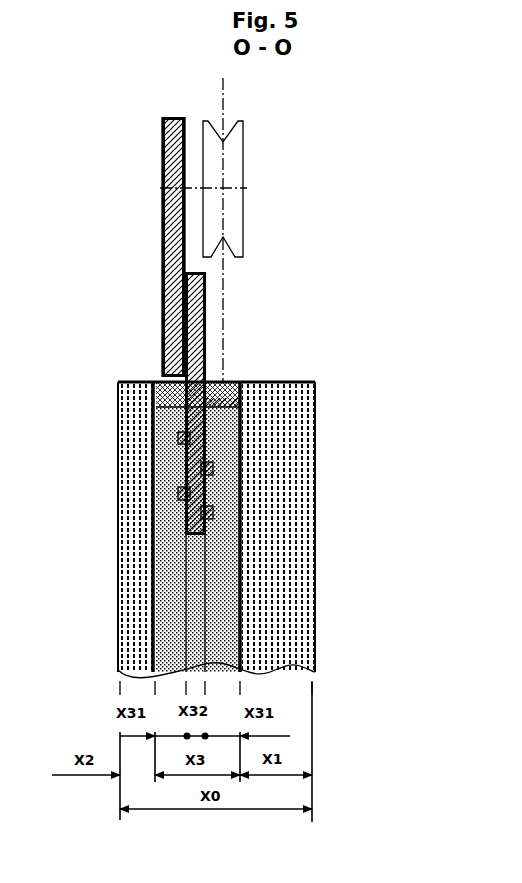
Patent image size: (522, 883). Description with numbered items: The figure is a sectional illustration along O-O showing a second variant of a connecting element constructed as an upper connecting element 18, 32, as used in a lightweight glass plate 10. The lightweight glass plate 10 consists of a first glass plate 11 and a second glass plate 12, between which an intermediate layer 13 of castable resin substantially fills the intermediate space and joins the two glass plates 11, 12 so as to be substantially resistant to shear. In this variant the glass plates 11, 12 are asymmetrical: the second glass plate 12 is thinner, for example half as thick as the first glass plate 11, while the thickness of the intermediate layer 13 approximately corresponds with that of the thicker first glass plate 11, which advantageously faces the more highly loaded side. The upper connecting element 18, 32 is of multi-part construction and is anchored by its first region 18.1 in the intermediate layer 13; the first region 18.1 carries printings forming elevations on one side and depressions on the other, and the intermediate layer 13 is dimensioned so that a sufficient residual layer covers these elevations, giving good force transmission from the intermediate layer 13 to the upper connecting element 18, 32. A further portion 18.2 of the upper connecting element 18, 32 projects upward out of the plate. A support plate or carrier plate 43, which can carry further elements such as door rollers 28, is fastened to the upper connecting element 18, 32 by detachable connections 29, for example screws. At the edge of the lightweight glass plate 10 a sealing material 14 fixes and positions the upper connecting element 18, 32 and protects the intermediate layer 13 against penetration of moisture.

The lightweight glass plate 10 is at (130, 130).
The first glass plate 11 is at (216, 530).
The second glass plate 12 is at (130, 428).
The intermediate layer 13 is at (224, 542).
The sealing material 14 is at (233, 381).
The drive element / flat strip 18, 32 is at (167, 351).
The first region 18.1 is at (265, 382).
The second portion of drive element 18.2 is at (205, 338).
The door roller 28 is at (225, 157).
The detachable connection 29 is at (157, 325).
The support plate 43 is at (165, 217).